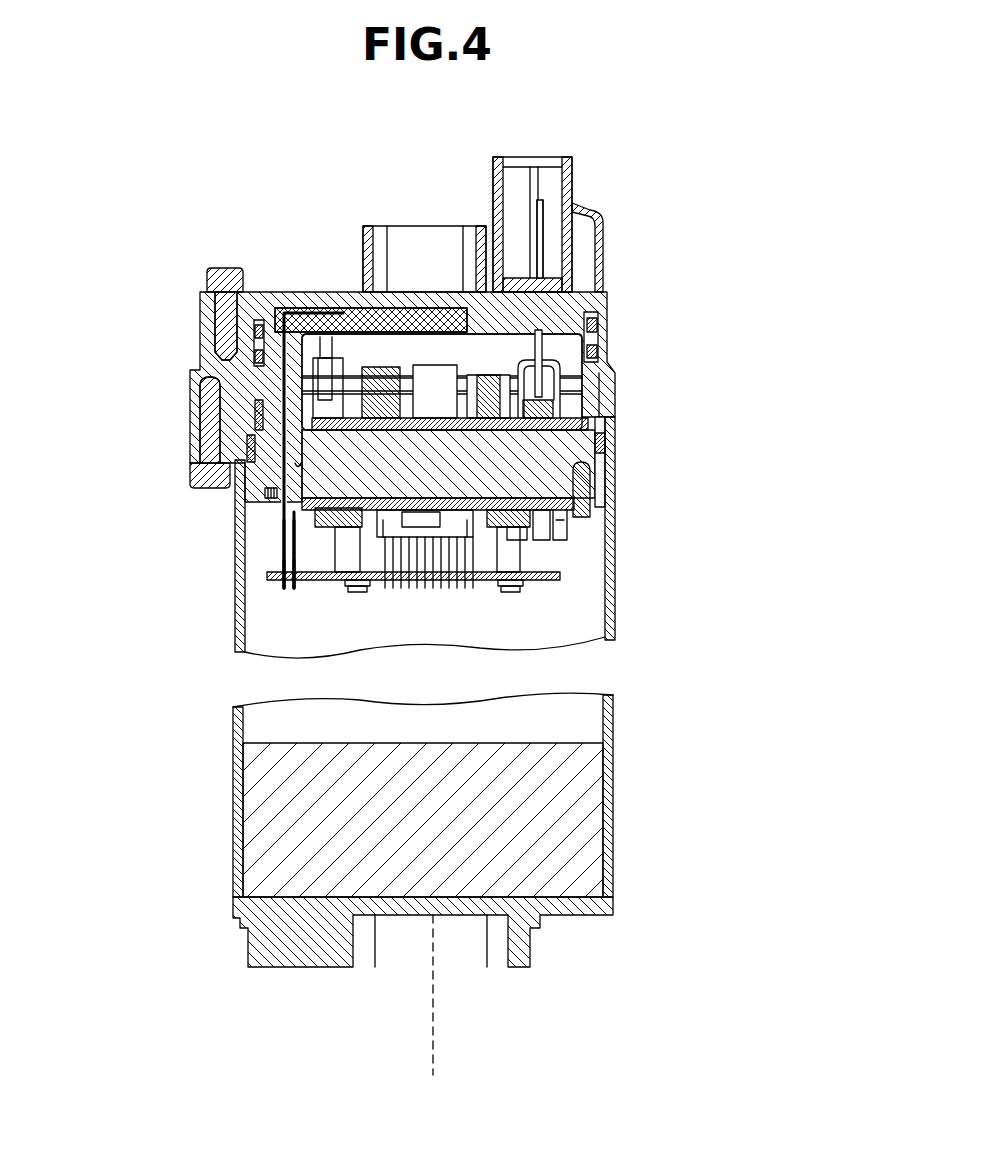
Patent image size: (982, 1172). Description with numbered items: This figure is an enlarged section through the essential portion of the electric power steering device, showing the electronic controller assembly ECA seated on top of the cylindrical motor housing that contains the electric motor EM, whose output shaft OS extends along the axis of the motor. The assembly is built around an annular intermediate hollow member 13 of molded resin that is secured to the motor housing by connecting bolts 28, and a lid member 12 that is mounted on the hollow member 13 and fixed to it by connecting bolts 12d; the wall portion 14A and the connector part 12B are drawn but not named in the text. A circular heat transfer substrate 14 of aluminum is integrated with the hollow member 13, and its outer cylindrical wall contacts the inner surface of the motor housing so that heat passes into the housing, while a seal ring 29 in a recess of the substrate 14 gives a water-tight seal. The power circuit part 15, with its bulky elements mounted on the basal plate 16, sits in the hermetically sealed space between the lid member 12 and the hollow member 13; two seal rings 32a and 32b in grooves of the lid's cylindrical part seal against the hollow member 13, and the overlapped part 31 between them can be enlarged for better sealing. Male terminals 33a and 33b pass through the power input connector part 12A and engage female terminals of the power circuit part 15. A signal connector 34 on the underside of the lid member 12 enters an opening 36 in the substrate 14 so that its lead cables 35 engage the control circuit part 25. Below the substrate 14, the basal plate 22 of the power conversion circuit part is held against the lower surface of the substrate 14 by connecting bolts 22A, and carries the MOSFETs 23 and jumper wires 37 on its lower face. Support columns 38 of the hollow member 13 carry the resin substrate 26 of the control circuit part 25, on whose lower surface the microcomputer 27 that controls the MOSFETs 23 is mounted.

The lid member 12 is at (657, 312).
The power input connector part 12A is at (575, 183).
The connector 12B is at (427, 226).
The connecting bolts 12d is at (210, 280).
The annular intermediate hollow member 13 is at (617, 400).
The heat transfer substrate 14 is at (565, 483).
The skirt wall 14A is at (242, 490).
The power circuit part 15 is at (487, 358).
The basal plate 16 is at (457, 425).
The basal plate 22 is at (500, 503).
The connecting bolts 22A is at (590, 505).
The MOSFETs 23 is at (330, 540).
The control circuit part 25 is at (307, 583).
The resin substrate 26 is at (289, 574).
The microcomputer 27 is at (420, 587).
The connecting bolts 28 is at (192, 480).
The seal ring 29 is at (607, 442).
The overlapped part 31 is at (625, 307).
The seal ring 32a is at (258, 330).
The seal ring 32b is at (258, 356).
The male terminal 33a is at (540, 230).
The male terminal 33b is at (540, 239).
The signal connector 34 is at (275, 438).
The lead cables 35 is at (312, 308).
The opening 36 is at (295, 463).
The jumper wires 37 is at (468, 537).
The support columns 38 is at (360, 550).
The electronic controller assembly ECA is at (628, 470).
The electric motor EM is at (423, 830).
The output shaft OS is at (437, 1018).